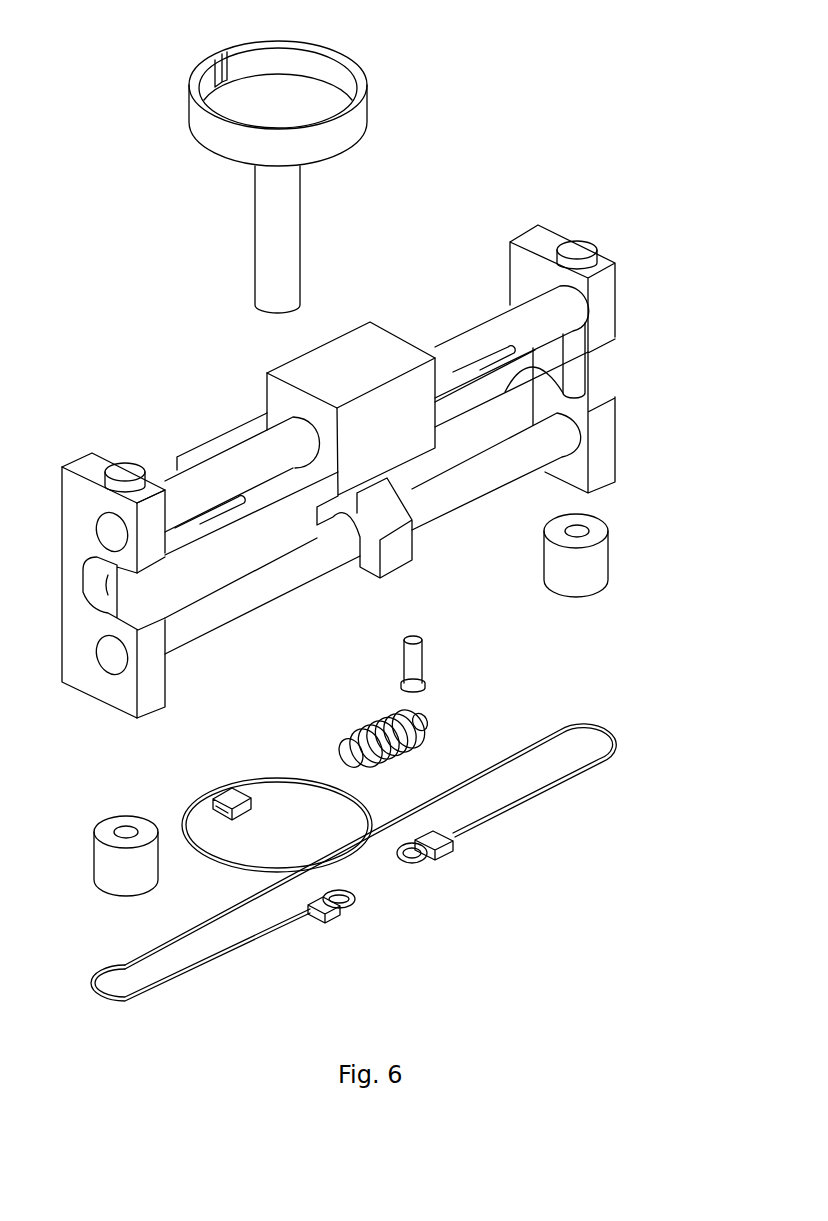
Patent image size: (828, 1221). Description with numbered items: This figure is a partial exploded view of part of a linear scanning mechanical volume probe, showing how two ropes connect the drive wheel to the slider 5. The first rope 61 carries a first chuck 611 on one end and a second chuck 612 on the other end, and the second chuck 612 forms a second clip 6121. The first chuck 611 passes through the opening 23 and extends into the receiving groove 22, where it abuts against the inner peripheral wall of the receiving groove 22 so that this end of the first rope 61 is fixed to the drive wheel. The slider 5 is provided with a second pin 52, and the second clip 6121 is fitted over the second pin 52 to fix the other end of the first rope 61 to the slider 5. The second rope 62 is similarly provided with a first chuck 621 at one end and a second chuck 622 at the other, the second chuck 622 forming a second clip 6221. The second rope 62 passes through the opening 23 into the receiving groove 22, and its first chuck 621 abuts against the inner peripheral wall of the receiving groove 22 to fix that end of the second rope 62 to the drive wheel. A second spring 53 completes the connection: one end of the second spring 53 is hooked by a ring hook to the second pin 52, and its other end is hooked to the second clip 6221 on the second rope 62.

The slider 5 is at (307, 372).
The receiving groove 22 is at (230, 102).
The opening 23 is at (218, 57).
The second pin 52 is at (418, 665).
The second spring 53 is at (427, 717).
The first rope 61 is at (612, 742).
The first chuck 611 is at (212, 793).
The second chuck 612 is at (446, 857).
The second clip 6121 is at (417, 862).
The second rope 62 is at (215, 963).
The first chuck 621 is at (225, 818).
The second chuck 622 is at (333, 918).
The second clip 6221 is at (354, 901).